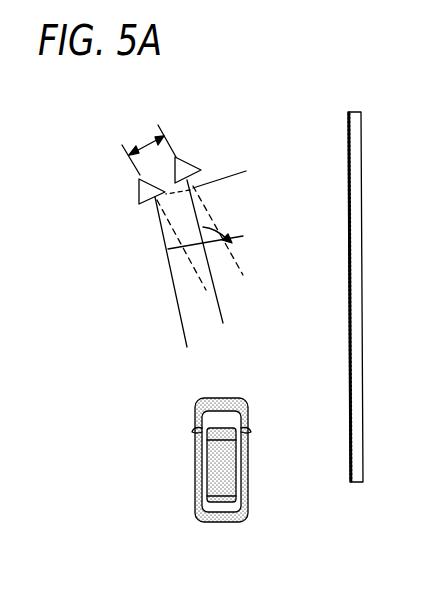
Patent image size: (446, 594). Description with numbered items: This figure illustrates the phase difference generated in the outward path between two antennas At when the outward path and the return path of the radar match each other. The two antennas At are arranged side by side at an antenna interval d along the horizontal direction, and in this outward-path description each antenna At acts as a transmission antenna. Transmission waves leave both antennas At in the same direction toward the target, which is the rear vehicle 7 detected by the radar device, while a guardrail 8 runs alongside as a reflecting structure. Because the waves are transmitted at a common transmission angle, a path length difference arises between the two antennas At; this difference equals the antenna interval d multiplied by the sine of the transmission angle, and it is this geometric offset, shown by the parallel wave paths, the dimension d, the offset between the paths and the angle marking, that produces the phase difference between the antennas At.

The rear vehicle 7 is at (250, 461).
The guardrail 8 is at (362, 318).
The antenna At is at (139, 190).
The antenna interval d is at (146, 136).